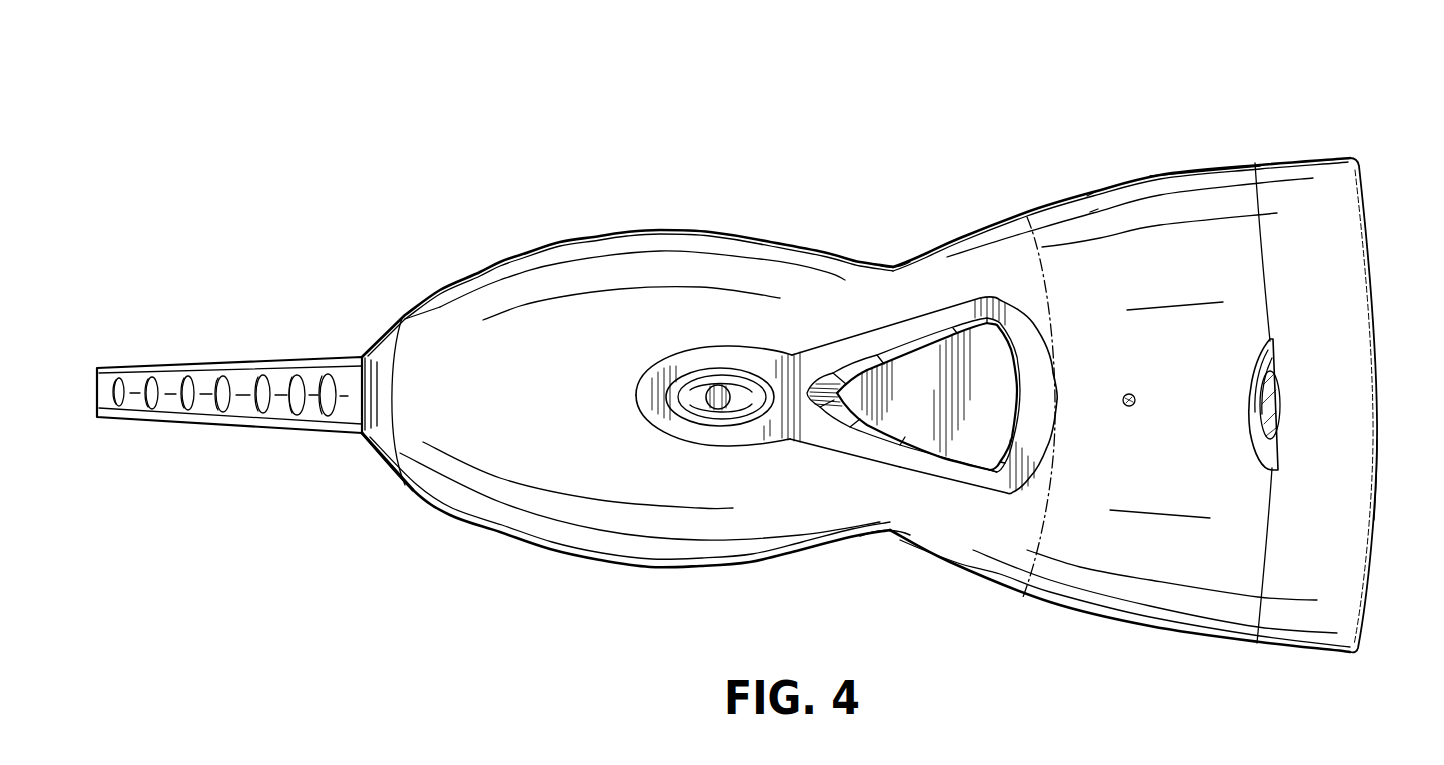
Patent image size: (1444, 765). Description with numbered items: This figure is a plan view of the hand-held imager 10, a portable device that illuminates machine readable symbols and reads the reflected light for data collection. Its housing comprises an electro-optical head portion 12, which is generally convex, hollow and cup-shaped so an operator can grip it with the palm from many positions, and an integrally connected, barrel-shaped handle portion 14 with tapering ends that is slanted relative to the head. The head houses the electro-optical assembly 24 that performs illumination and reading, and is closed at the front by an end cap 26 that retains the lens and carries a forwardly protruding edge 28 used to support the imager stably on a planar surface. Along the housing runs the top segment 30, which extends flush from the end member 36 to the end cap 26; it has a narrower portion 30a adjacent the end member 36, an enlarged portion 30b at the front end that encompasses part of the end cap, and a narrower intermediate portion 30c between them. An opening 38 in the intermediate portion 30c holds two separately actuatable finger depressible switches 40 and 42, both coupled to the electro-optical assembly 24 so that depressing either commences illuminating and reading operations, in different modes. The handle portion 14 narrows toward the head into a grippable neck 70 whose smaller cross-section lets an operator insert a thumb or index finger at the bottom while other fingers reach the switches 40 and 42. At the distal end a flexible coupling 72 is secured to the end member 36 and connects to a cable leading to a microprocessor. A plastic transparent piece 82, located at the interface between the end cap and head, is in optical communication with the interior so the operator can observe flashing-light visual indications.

The hand-held imager 10 is at (771, 110).
The electro-optical head portion 12 is at (1112, 636).
The handle portion 14 is at (495, 244).
The electro-optical assembly 24 is at (1092, 213).
The end cap 26 is at (1347, 398).
The protruding edge 28 is at (1378, 470).
The top segment 30 is at (740, 246).
The narrower portion 30a is at (433, 310).
The enlarged portion 30b is at (1210, 172).
The intermediate portion 30c is at (893, 282).
The end member 36 is at (377, 460).
The opening 38 is at (832, 448).
The finger depressible switch 40 is at (718, 405).
The finger depressible switch 42 is at (993, 365).
The grippable neck 70 is at (893, 537).
The flexible coupling 72 is at (243, 368).
The transparent piece 82 is at (1263, 387).